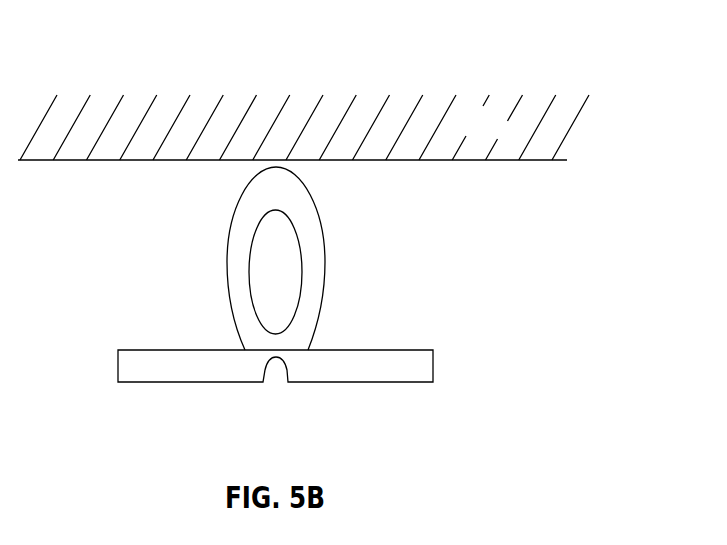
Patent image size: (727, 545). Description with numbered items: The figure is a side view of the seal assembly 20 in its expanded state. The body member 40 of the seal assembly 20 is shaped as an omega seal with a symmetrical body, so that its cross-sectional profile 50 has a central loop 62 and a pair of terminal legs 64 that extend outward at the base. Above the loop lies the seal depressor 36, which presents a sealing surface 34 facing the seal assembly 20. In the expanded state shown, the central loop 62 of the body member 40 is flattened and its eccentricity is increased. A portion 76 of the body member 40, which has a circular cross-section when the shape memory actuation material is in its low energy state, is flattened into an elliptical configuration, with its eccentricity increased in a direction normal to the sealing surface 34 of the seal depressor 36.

The seal assembly 20 is at (552, 60).
The sealing surface 34 is at (520, 161).
The seal depressor 36 is at (500, 138).
The body member 40 is at (290, 202).
The cross-sectional profile 50 is at (245, 202).
The central loop 62 is at (317, 260).
The terminal legs 64 is at (142, 367).
The portion of the body member 76 is at (230, 264).